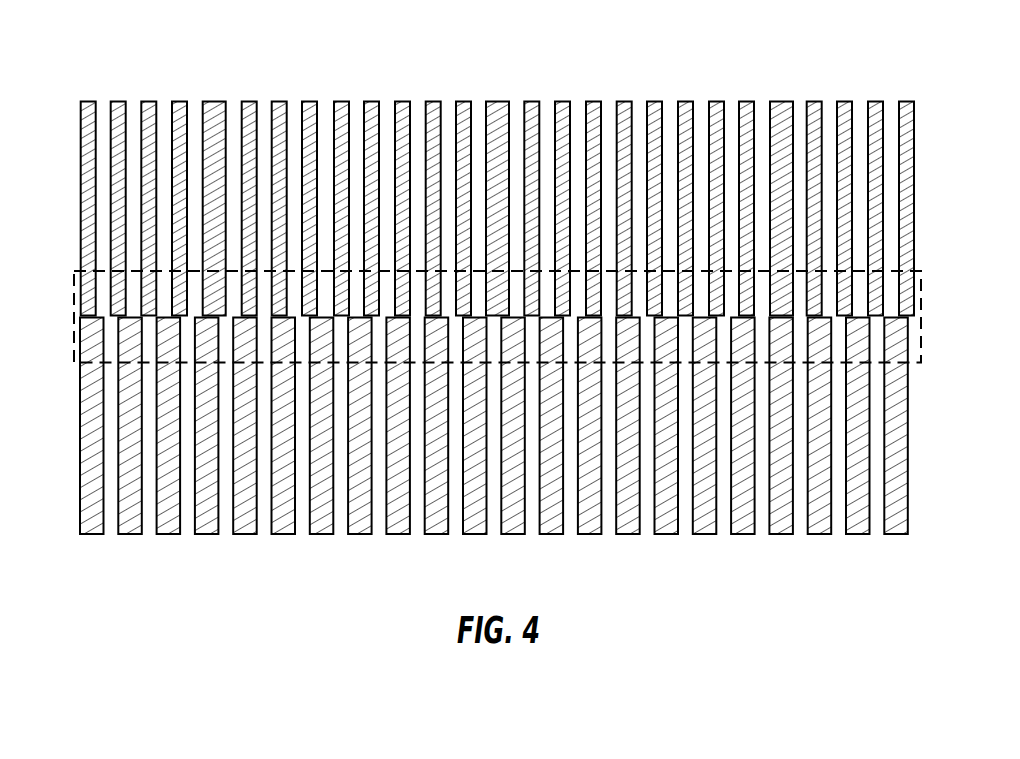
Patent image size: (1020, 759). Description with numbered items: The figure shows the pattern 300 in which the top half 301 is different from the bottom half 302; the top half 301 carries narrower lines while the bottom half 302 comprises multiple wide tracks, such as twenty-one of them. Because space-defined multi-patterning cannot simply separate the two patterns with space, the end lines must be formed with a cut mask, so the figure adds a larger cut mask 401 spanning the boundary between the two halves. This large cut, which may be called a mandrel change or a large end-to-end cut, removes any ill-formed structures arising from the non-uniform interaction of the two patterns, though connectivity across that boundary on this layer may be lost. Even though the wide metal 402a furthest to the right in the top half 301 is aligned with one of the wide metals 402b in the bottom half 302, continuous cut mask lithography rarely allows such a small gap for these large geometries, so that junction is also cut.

The pattern 300 is at (819, 42).
The top half 301 is at (80, 95).
The bottom half 302 is at (80, 318).
The larger cut mask 401 is at (74, 288).
The wide metal 402a is at (767, 90).
The wide metal 402b is at (767, 548).